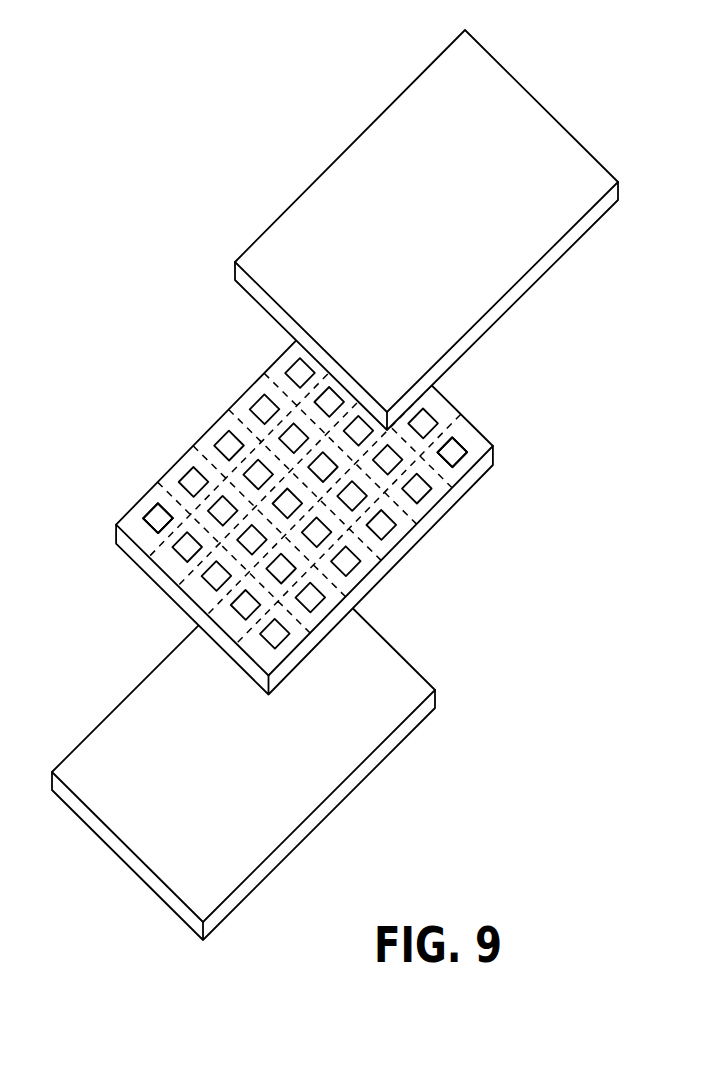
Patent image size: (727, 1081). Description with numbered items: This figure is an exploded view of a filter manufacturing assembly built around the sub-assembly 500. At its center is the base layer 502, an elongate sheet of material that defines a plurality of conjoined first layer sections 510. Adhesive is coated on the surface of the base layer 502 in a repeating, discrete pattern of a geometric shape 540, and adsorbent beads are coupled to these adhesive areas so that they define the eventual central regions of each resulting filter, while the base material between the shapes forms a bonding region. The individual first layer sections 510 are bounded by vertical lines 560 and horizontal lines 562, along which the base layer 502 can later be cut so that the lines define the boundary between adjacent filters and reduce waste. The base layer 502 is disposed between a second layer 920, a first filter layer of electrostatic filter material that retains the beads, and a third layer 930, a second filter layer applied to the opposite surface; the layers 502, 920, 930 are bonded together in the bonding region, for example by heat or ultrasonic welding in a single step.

The sub-assembly 500 is at (311, 515).
The base layer 502 is at (455, 428).
The first layer sections 510 is at (228, 443).
The geometric shape 540 is at (152, 522).
The vertical lines 560 is at (197, 445).
The horizontal lines 562 is at (237, 652).
The second layer 920 is at (577, 172).
The third layer 930 is at (395, 688).